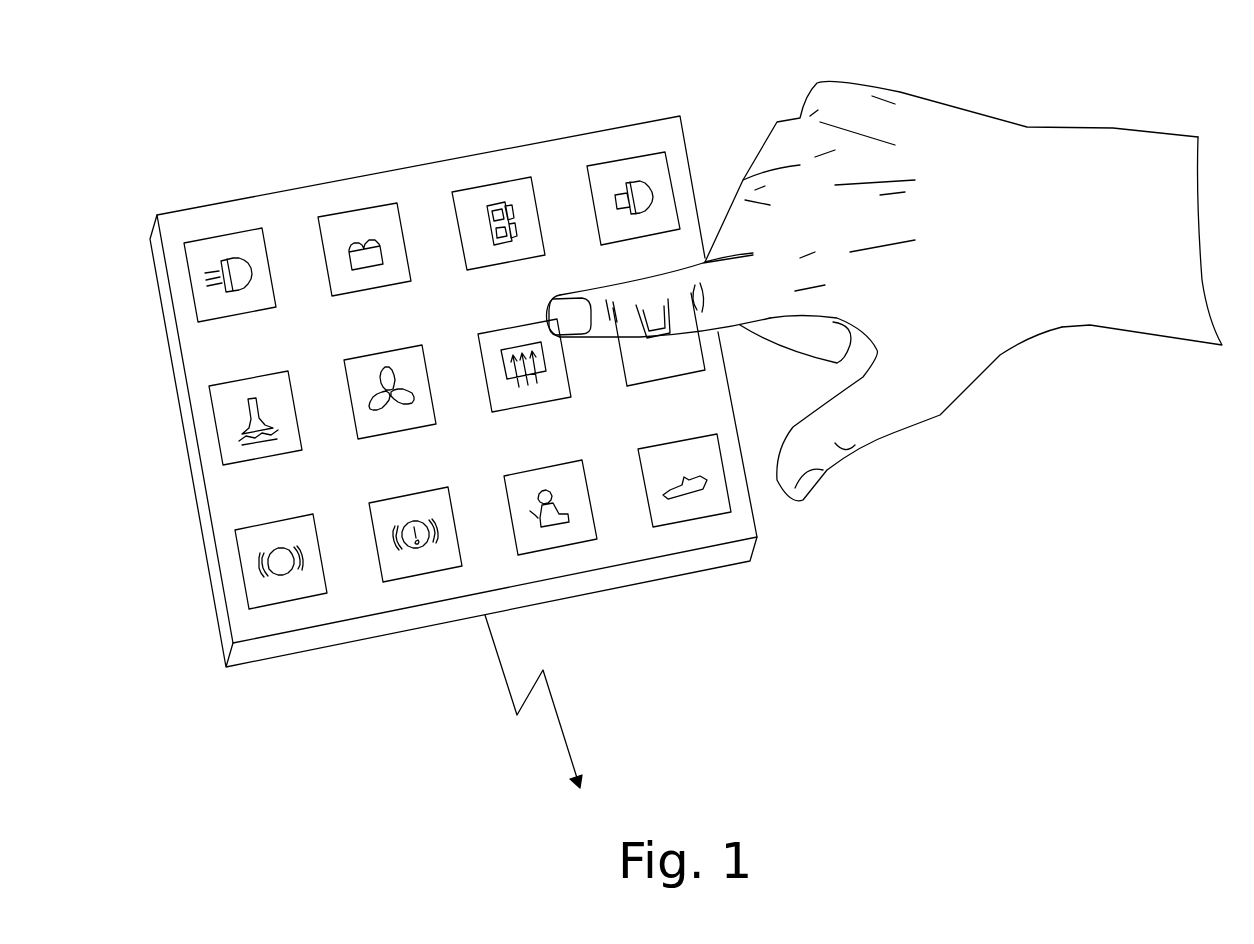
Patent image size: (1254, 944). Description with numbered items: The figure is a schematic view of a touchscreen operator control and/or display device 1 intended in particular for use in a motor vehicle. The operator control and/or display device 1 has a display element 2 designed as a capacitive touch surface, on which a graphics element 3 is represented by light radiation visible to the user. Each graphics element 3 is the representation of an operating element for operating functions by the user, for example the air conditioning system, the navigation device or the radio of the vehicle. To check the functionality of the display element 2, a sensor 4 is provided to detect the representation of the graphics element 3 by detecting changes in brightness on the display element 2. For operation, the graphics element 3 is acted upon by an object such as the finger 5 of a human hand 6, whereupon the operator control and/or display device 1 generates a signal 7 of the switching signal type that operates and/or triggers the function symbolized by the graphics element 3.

The touchscreen operator control and/or display device 1 is at (208, 577).
The display element 2 is at (322, 326).
The graphics element 3 is at (223, 422).
The sensor 4 is at (183, 295).
The finger 5 is at (580, 263).
The human hand 6 is at (1110, 170).
The signal 7 is at (560, 717).